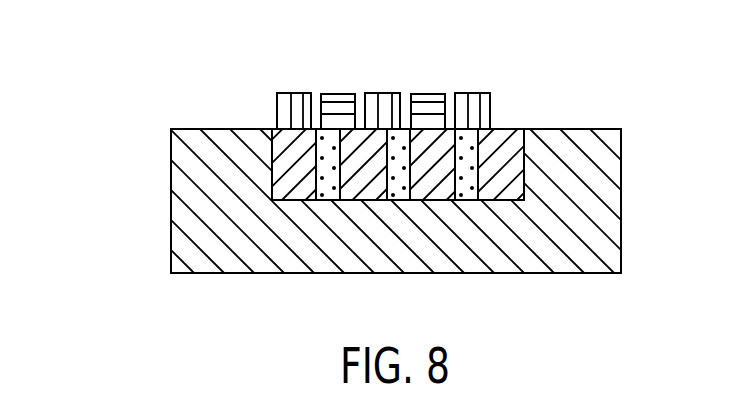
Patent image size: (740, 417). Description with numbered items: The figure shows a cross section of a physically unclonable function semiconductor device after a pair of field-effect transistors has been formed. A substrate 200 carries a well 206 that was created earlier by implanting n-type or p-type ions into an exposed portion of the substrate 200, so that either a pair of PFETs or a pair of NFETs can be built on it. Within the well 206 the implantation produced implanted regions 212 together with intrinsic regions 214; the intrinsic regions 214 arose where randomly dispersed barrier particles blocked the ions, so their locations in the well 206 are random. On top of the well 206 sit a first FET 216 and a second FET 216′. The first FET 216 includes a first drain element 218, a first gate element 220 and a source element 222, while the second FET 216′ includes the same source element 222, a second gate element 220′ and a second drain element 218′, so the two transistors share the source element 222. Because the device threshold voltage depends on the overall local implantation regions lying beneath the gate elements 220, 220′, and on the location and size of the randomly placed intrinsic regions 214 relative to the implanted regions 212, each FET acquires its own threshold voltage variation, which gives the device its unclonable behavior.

The substrate 200 is at (188, 217).
The well 206 is at (329, 221).
The implanted regions 212 is at (297, 185).
The intrinsic regions 214 is at (402, 187).
The first FET 216 is at (241, 95).
The second FET 216′ is at (531, 97).
The first drain element 218 is at (292, 100).
The second drain element 218′ is at (478, 96).
The first gate element 220 is at (337, 97).
The second gate element 220′ is at (430, 96).
The source element 222 is at (382, 98).